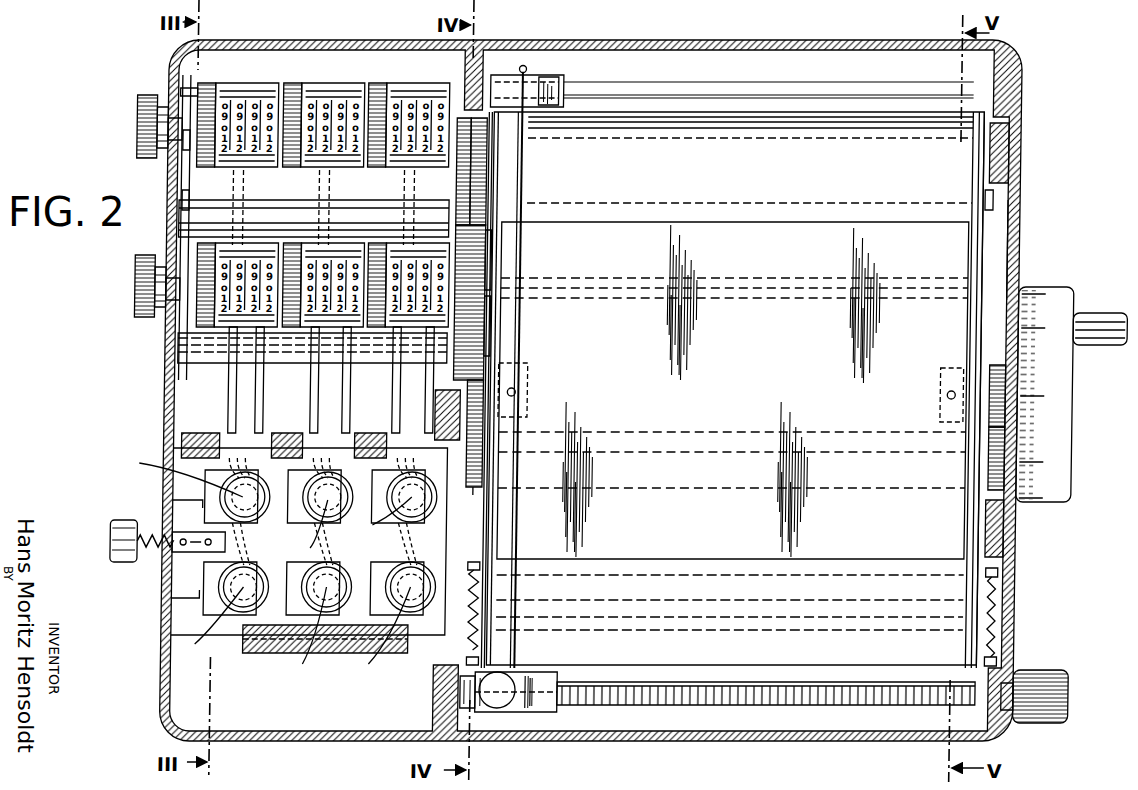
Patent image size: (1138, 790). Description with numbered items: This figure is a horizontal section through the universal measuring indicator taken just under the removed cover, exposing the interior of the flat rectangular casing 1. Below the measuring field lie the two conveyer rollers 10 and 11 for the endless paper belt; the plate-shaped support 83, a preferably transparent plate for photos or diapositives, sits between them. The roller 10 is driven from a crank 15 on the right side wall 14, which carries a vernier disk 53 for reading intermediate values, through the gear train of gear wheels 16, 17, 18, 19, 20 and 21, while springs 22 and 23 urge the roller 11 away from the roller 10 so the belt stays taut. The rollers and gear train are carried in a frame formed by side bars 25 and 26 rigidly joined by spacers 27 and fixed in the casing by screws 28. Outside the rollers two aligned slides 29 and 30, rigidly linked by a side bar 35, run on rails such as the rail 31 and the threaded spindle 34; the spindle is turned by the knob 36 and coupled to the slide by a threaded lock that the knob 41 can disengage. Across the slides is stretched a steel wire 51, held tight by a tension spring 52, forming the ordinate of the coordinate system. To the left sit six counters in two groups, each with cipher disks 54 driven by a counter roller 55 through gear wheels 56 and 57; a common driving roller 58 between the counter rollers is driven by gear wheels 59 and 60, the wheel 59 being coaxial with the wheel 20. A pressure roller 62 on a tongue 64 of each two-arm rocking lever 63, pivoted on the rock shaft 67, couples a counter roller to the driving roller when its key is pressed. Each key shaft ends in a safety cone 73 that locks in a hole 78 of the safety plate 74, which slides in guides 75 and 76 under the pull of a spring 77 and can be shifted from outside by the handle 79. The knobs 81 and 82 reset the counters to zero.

The casing 1 is at (1027, 76).
The conveyer roller 10 is at (788, 178).
The conveyer roller 11 is at (730, 602).
The right side wall 14 is at (1017, 245).
The crank 15 is at (1105, 325).
The gear wheel 16 is at (1000, 362).
The gear wheel 17 is at (997, 470).
The gear wheel 18 is at (488, 460).
The gear wheel 19 is at (480, 490).
The gear wheel 20 is at (488, 352).
The gear wheel 21 is at (472, 160).
The spring 22 is at (478, 630).
The spring 23 is at (1006, 612).
The side bar 25 is at (488, 184).
The side bar 26 is at (978, 170).
The spacers 27 is at (888, 278).
The screws 28 is at (1005, 147).
The slide 29 is at (540, 712).
The slide 30 is at (552, 84).
The rail 31 is at (678, 92).
The threaded spindle 34 is at (660, 705).
The side bar 35 is at (560, 110).
The knob 36 is at (1055, 672).
The knob 41 is at (505, 712).
The steel wire 51 is at (528, 602).
The tension spring 52 is at (540, 48).
The vernier disk 53 is at (1060, 432).
The cipher disks 54 is at (323, 100).
The counter roller 55 is at (405, 98).
The gear wheel 56 is at (205, 96).
The gear wheel 57 is at (200, 143).
The driving roller 58 is at (225, 205).
The gear wheel 59 is at (470, 312).
The gear wheel 60 is at (495, 242).
The pressure roller 62 is at (322, 240).
The rocking lever 63 is at (352, 388).
The tongue 64 is at (410, 240).
The rock shaft 67 is at (200, 352).
The safety cone 73 is at (285, 572).
The safety plate 74 is at (193, 618).
The guide 75 is at (365, 438).
The guide 76 is at (290, 653).
The spring 77 is at (158, 550).
The hole 78 is at (180, 504).
The handle 79 is at (125, 555).
The knob 81 is at (148, 120).
The knob 82 is at (147, 287).
The plate-shaped support 83 is at (752, 360).